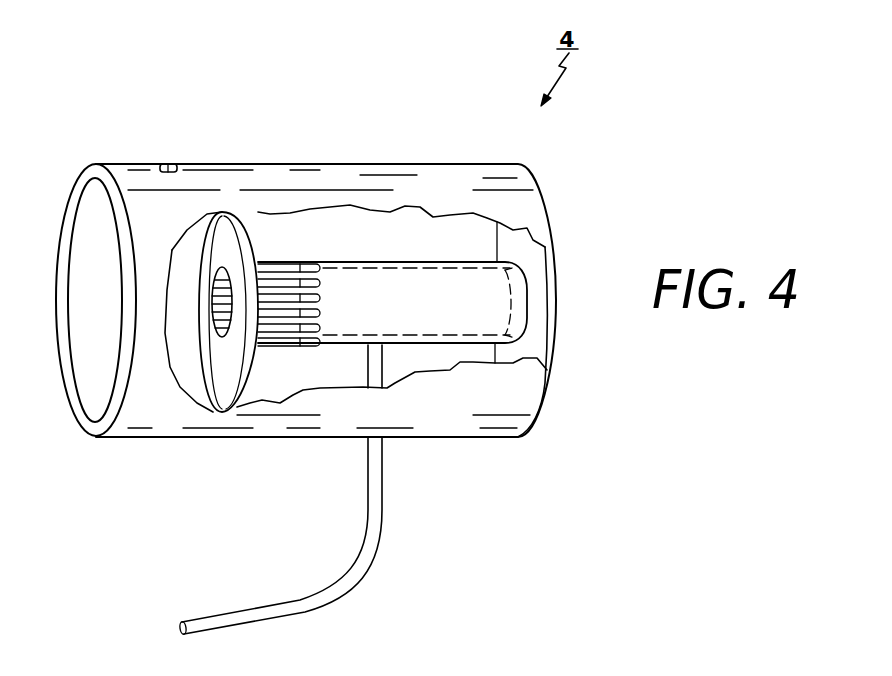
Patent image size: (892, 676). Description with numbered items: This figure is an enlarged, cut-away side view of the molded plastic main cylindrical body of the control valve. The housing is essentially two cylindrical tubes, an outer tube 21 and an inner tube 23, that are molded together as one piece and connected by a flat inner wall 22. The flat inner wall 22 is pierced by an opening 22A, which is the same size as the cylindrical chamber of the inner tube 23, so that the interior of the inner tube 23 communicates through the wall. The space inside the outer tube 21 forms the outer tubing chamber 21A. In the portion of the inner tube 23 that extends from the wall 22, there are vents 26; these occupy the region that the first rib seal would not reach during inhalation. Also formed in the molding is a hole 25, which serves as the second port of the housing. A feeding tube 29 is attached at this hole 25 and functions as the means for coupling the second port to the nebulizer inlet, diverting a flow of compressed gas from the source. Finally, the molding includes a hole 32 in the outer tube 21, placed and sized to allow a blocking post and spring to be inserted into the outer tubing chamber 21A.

The outer tube 21 is at (343, 426).
The outer tubing chamber 21A is at (303, 390).
The flat inner wall 22 is at (223, 388).
The opening 22A is at (222, 312).
The inner tube 23 is at (443, 262).
The hole 25 is at (383, 345).
The vents 26 is at (283, 277).
The feeding tube 29 is at (258, 607).
The hole 32 is at (166, 164).